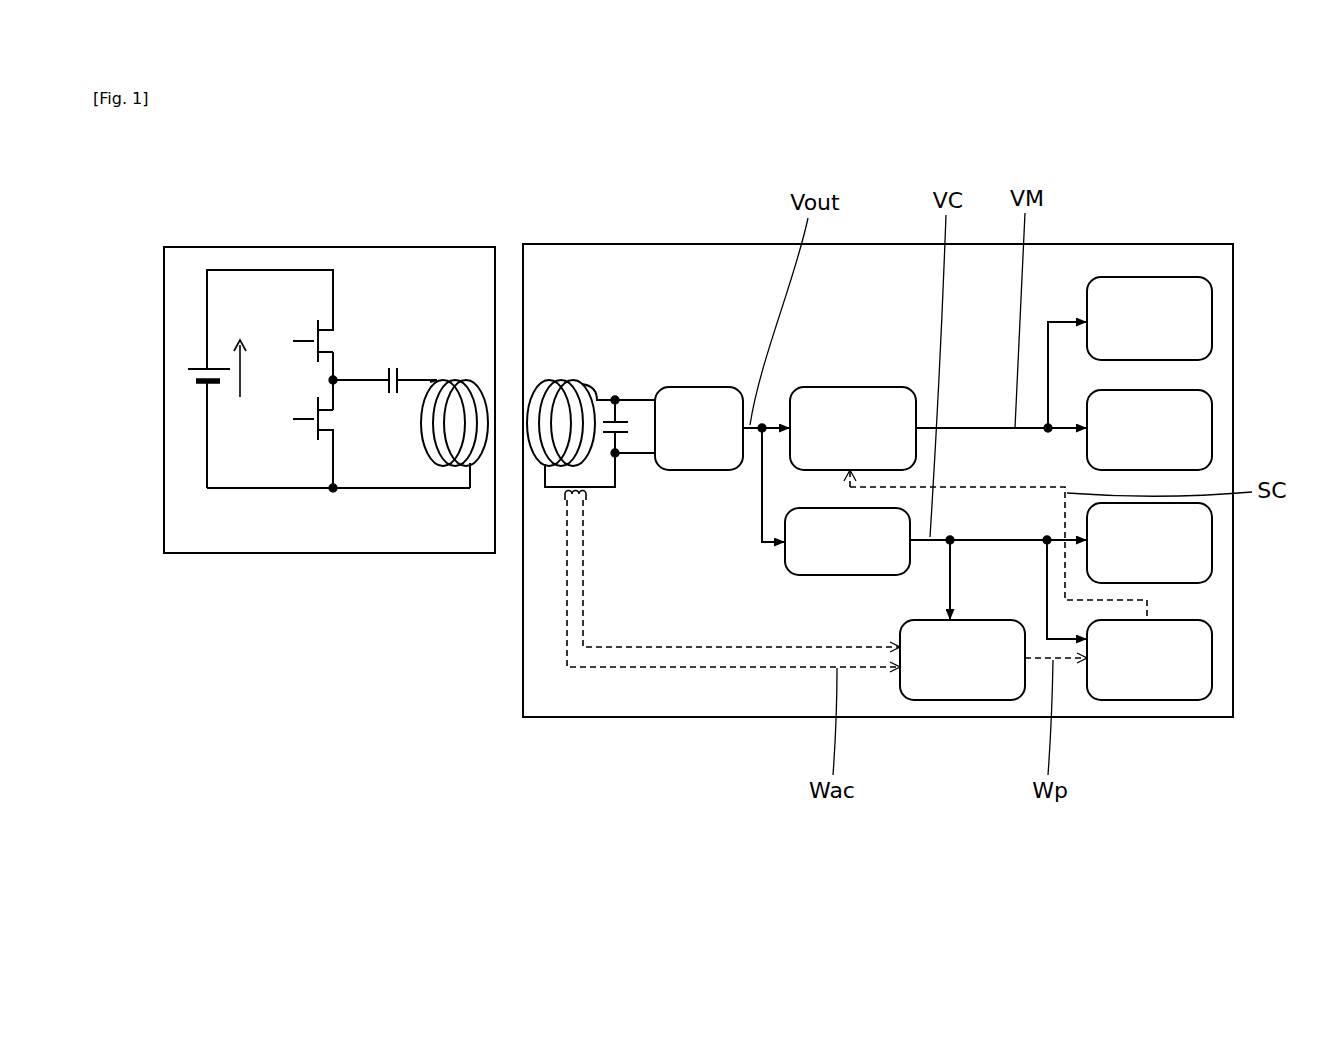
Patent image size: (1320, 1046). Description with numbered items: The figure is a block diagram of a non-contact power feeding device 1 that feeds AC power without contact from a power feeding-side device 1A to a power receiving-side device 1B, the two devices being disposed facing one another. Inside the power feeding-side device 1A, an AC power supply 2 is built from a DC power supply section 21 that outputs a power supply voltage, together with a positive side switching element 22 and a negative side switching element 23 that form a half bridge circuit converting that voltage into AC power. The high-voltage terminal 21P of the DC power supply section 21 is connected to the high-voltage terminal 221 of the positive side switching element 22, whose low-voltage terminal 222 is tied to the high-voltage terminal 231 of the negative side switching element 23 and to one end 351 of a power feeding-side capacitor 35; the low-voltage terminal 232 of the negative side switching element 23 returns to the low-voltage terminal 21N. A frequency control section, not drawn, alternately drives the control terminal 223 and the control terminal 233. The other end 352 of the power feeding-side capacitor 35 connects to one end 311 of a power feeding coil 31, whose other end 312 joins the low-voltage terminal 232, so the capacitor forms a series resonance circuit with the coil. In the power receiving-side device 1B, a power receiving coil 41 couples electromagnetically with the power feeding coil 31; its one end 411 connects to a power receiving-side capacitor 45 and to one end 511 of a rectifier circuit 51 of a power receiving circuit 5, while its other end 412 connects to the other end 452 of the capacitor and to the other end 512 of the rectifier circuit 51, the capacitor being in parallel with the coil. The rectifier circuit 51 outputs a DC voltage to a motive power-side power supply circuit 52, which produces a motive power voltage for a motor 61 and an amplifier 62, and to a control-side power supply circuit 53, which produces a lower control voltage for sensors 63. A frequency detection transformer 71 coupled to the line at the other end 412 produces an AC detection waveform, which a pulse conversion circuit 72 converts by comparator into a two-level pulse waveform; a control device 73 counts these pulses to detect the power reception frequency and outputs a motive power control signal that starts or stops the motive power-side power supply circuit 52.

The non-contact power feeding device 1 is at (696, 432).
The power feeding-side device 1A is at (177, 257).
The power receiving-side device 1B is at (1196, 253).
The AC power supply 2 is at (286, 337).
The DC power supply section 21 is at (166, 369).
The high-voltage terminal 21P is at (207, 325).
The low-voltage terminal 21N is at (207, 408).
The positive side switching element 22 is at (321, 281).
The high-voltage terminal 221 is at (333, 295).
The low-voltage terminal 222 is at (337, 358).
The control terminal 223 is at (305, 338).
The negative side switching element 23 is at (322, 515).
The high-voltage terminal 231 is at (337, 402).
The low-voltage terminal 232 is at (337, 453).
The control terminal 233 is at (301, 422).
The power feeding coil 31 is at (456, 400).
The one end 311 is at (422, 378).
The other end 312 is at (470, 468).
The power feeding-side capacitor 35 is at (401, 276).
The one end 351 is at (389, 366).
The other end 352 is at (412, 378).
The power receiving coil 41 is at (567, 469).
The one end 411 is at (615, 398).
The other end 412 is at (547, 490).
The power receiving-side capacitor 45 is at (640, 503).
The other end 452 is at (615, 458).
The power receiving circuit 5 is at (849, 377).
The rectifier circuit 51 is at (698, 498).
The one end 511 is at (655, 400).
The other end 512 is at (647, 455).
The motive power-side power supply circuit 52 is at (853, 428).
The control-side power supply circuit 53 is at (847, 541).
The motor 61 is at (1149, 318).
The amplifier 62 is at (1149, 430).
The sensors 63 is at (1149, 543).
The frequency detection transformer 71 is at (565, 503).
The pulse conversion circuit 72 is at (962, 660).
The control device 73 is at (1149, 660).